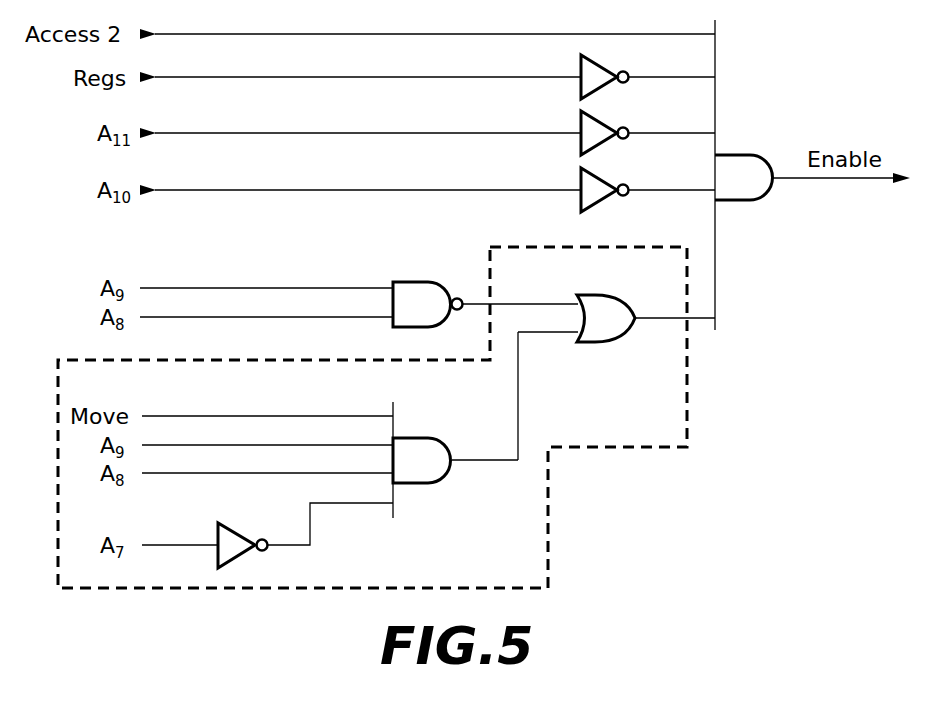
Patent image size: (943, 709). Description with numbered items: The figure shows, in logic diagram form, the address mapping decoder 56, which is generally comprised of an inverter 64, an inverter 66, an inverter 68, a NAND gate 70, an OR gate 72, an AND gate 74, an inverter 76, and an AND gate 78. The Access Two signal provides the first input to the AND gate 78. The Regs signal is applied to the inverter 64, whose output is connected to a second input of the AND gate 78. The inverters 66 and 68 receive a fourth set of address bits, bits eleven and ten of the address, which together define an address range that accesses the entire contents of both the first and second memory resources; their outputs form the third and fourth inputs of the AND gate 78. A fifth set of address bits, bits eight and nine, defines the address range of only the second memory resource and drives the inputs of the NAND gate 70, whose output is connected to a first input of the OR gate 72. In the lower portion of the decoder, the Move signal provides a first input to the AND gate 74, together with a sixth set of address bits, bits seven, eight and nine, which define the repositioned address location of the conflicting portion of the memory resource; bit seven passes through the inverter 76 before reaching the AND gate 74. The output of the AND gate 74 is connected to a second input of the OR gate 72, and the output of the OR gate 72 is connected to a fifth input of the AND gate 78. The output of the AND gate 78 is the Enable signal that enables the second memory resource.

The address mapping decoder 56 is at (742, 419).
The inverter 64 is at (598, 57).
The inverter 66 is at (598, 113).
The inverter 68 is at (598, 170).
The NAND gate 70 is at (410, 282).
The OR gate 72 is at (612, 295).
The AND gate 74 is at (415, 438).
The inverter 76 is at (234, 526).
The AND gate 78 is at (736, 155).